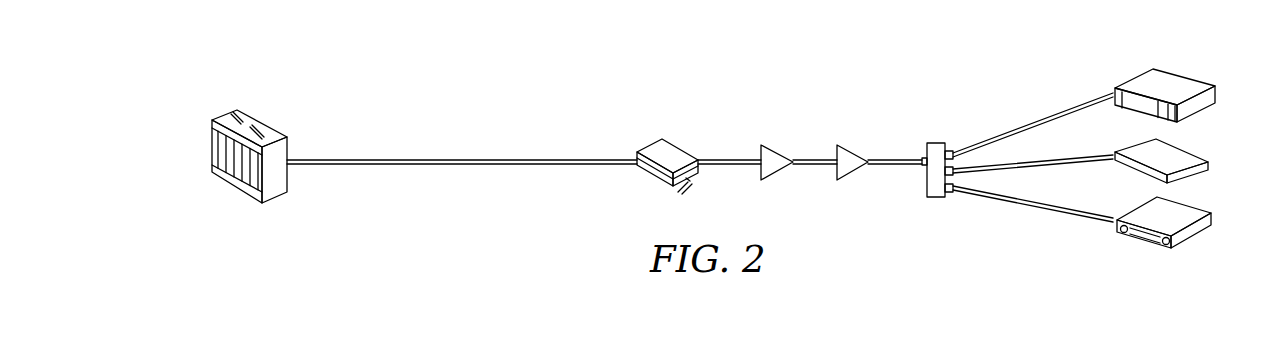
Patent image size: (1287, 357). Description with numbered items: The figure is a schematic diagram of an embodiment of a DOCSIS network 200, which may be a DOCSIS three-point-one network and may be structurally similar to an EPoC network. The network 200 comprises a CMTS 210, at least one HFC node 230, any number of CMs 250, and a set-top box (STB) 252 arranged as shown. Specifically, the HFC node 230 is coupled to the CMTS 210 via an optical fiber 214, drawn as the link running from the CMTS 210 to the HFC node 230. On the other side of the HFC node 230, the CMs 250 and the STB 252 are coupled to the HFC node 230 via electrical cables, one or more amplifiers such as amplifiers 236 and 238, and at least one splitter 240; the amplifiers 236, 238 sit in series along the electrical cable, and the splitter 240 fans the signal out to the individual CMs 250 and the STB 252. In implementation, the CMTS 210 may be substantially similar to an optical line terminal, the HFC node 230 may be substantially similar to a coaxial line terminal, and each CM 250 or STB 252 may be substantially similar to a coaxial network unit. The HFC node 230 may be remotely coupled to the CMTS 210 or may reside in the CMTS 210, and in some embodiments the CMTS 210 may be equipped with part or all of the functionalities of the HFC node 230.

The DOCSIS network 200 is at (206, 79).
The CMTS 210 is at (263, 120).
The optical fiber 214 is at (495, 159).
The HFC node 230 is at (682, 150).
The amplifier 236 is at (768, 178).
The amplifier 238 is at (845, 178).
The splitter 240 is at (933, 197).
The CM 250 is at (1187, 77).
The STB 252 is at (1190, 236).